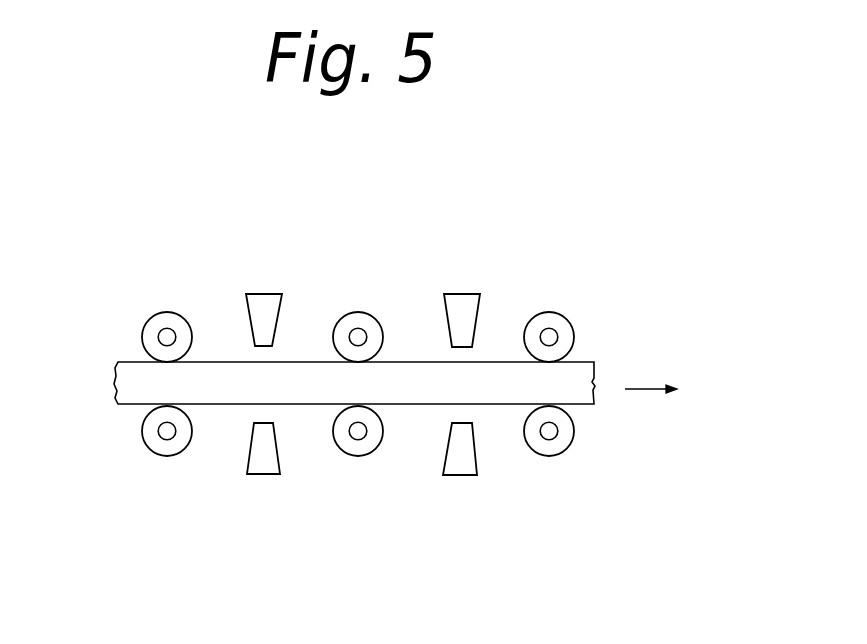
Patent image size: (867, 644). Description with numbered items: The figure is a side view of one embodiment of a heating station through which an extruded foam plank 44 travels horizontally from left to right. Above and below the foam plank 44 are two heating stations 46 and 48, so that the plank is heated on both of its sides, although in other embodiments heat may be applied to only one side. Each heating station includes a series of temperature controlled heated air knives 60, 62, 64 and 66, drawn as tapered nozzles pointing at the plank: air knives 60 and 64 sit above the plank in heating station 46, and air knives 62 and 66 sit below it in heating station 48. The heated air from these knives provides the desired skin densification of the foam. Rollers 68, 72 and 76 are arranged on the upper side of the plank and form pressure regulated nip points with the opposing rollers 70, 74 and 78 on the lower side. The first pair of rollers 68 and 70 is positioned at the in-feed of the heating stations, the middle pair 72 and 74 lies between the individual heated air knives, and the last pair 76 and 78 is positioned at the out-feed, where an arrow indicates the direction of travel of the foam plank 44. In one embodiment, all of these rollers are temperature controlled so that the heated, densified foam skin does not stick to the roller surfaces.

The foam plank 44 is at (122, 404).
The heating station 46 is at (320, 238).
The heating station 48 is at (319, 512).
The heated air knife 60 is at (255, 293).
The heated air knife 62 is at (252, 475).
The heated air knife 64 is at (462, 293).
The heated air knife 66 is at (463, 475).
The roller 68 is at (155, 313).
The roller 70 is at (154, 455).
The roller 72 is at (362, 312).
The roller 74 is at (371, 455).
The roller 76 is at (558, 313).
The roller 78 is at (559, 456).